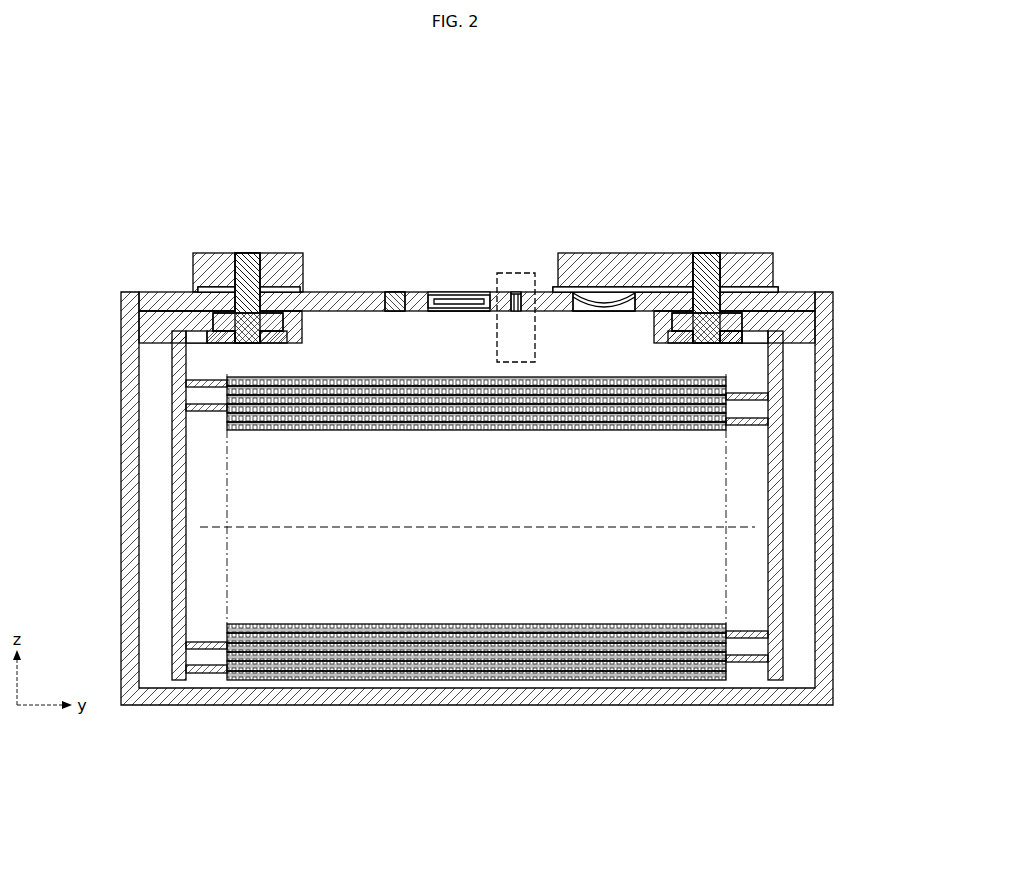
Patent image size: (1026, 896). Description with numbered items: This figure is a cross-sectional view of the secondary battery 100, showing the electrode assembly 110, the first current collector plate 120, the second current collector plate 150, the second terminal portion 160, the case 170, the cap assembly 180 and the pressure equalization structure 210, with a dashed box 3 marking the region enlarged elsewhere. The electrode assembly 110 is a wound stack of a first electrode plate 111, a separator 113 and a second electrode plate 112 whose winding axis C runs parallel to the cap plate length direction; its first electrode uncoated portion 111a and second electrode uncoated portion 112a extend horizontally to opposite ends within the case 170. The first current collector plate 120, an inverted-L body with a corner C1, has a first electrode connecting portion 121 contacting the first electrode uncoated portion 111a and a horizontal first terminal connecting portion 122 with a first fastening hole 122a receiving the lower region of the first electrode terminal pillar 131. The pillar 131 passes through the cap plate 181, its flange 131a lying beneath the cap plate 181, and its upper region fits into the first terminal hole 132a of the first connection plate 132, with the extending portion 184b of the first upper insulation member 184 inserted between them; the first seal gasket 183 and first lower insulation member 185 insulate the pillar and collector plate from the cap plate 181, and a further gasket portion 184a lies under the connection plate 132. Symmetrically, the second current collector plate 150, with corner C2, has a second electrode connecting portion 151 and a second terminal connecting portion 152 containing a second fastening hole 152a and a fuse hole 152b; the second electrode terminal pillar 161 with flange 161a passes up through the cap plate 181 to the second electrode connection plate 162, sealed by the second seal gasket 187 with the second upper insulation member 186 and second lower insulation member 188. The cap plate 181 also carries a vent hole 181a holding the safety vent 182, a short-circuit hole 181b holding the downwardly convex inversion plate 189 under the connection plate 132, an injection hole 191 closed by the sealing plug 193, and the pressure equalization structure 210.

The secondary battery 100 is at (477, 427).
The electrode assembly 110 is at (477, 569).
The first electrode plate 111 is at (638, 681).
The first electrode uncoated portion 111a is at (748, 663).
The second electrode plate 112 is at (425, 681).
The second electrode uncoated portion 112a is at (207, 674).
The separator 113 is at (520, 681).
The first current collector plate 120 is at (754, 466).
The first electrode connecting portion 121 is at (786, 552).
The first terminal connecting portion 122 is at (750, 305).
The first fastening hole 122a is at (760, 345).
The first electrode terminal pillar 131 is at (706, 264).
The flange 131a is at (668, 332).
The first connection plate 132 is at (663, 247).
The first terminal hole 132a is at (700, 263).
The second current collector plate 150 is at (203, 461).
The second electrode connecting portion 151 is at (175, 553).
The second terminal connecting portion 152 is at (203, 313).
The second fastening hole 152a is at (247, 347).
The fuse hole 152b is at (196, 292).
The second terminal portion 160 is at (248, 261).
The second electrode terminal pillar 161 is at (256, 281).
The flange 161a is at (300, 322).
The second electrode connection plate 162 is at (213, 262).
The case 170 is at (837, 626).
The cap assembly 180 is at (480, 278).
The cap plate 181 is at (346, 290).
The vent hole 181a is at (443, 312).
The short-circuit hole 181b is at (578, 311).
The safety vent 182 is at (462, 297).
The first seal gasket 183 is at (770, 292).
The first upper insulation member 184 is at (693, 247).
The seal gasket first portion 184a is at (610, 288).
The extending portion 184b is at (745, 288).
The first lower insulation member 185 is at (800, 322).
The second upper insulation member 186 is at (222, 287).
The second seal gasket 187 is at (207, 290).
The second lower insulation member 188 is at (160, 328).
The inversion plate 189 is at (600, 306).
The injection hole 191 is at (394, 312).
The sealing plug 193 is at (392, 296).
The pressure equalization structure 210 is at (517, 285).
The enlarged region of FIG. 3 is at (503, 273).
The winding axis C is at (617, 524).
The corner C1 is at (790, 332).
The corner C2 is at (150, 335).